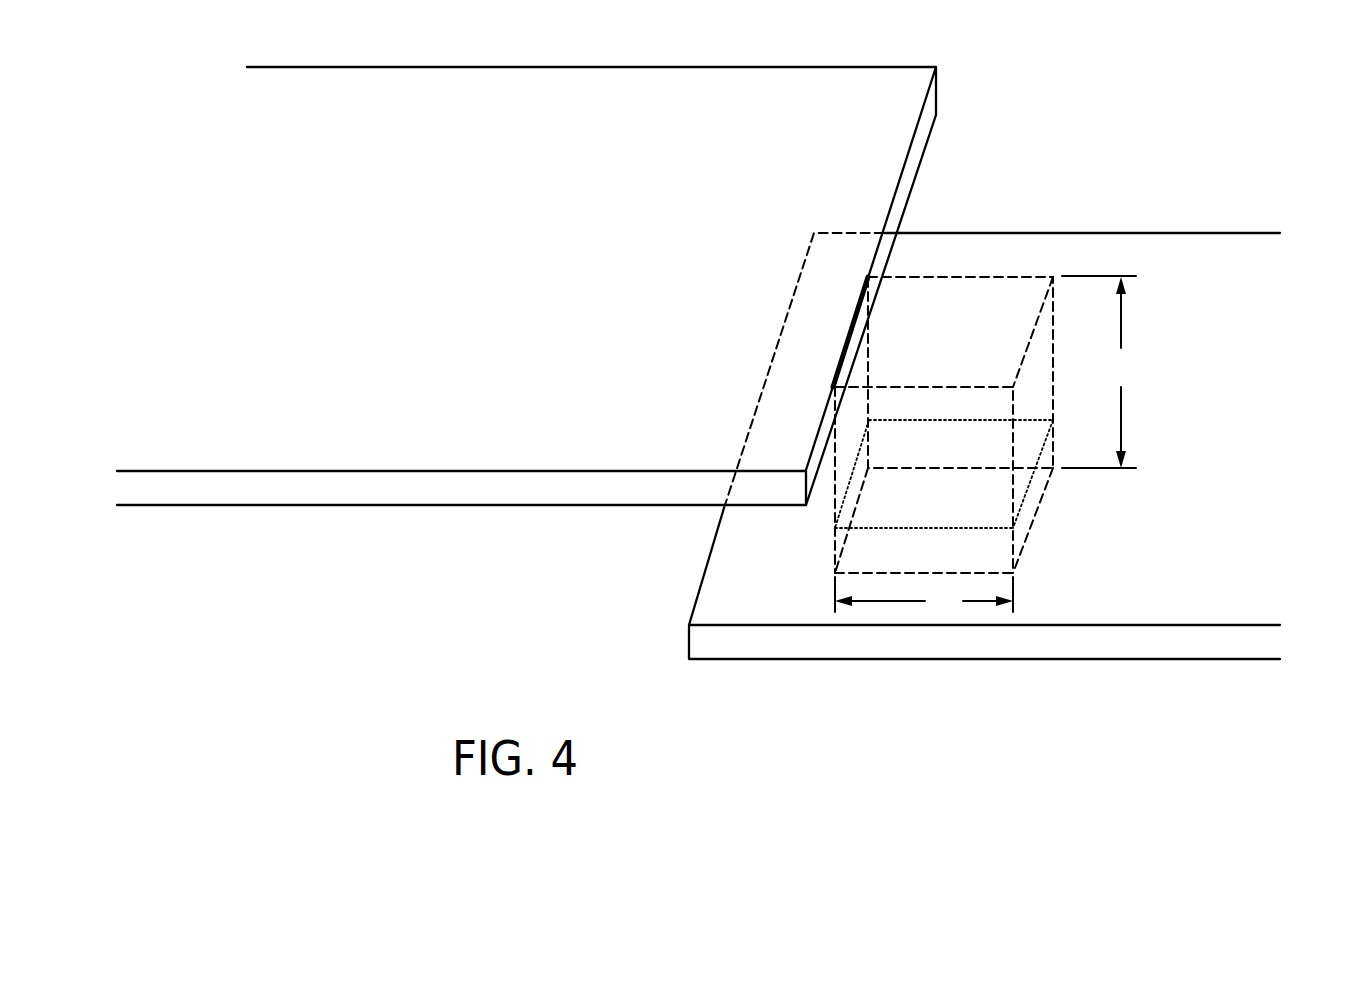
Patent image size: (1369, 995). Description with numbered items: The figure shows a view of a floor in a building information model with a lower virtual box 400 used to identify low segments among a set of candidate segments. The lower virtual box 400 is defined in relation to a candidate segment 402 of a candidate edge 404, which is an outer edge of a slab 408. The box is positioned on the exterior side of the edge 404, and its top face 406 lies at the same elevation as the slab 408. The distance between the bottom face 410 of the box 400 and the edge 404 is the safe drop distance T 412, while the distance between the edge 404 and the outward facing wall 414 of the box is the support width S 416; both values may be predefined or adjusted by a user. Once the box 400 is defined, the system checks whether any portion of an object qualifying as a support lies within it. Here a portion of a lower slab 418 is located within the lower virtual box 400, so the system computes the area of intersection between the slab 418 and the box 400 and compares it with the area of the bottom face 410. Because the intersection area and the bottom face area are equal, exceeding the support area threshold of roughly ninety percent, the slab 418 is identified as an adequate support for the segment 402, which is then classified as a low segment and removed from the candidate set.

The lower virtual box 400 is at (962, 300).
The candidate segment 402 is at (848, 337).
The candidate edge 404 is at (900, 177).
The top face 406 is at (1027, 277).
The slab 408 is at (530, 445).
The bottom face 410 is at (880, 580).
The safe drop distance T 412 is at (1121, 332).
The outward facing wall 414 is at (1032, 448).
The support width S 416 is at (912, 602).
The lower slab 418 is at (1159, 605).